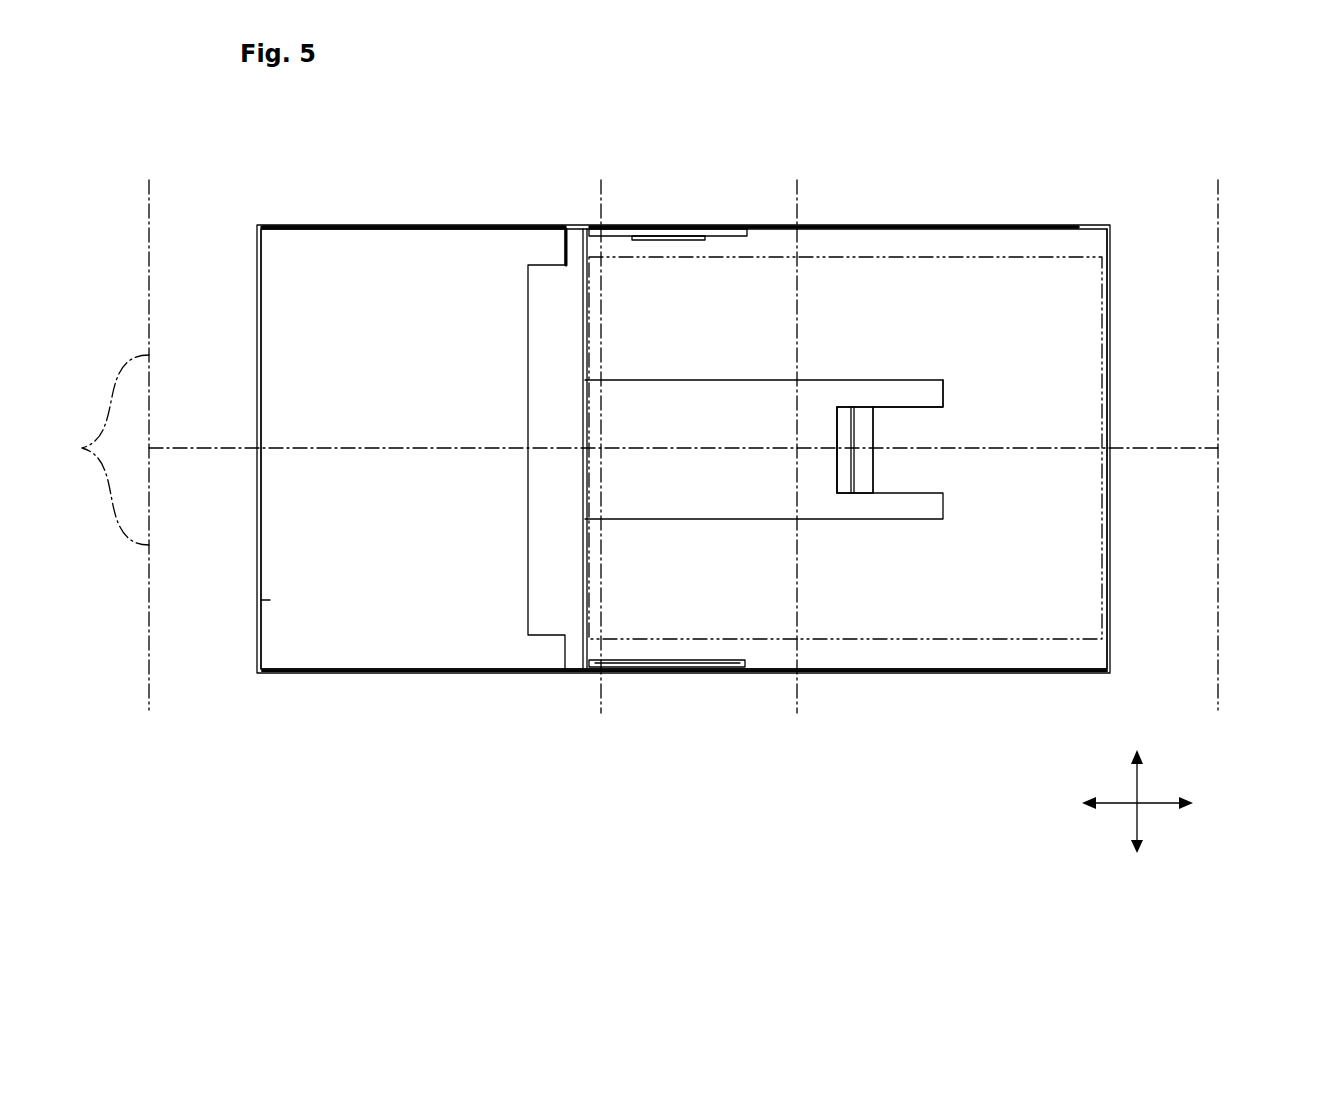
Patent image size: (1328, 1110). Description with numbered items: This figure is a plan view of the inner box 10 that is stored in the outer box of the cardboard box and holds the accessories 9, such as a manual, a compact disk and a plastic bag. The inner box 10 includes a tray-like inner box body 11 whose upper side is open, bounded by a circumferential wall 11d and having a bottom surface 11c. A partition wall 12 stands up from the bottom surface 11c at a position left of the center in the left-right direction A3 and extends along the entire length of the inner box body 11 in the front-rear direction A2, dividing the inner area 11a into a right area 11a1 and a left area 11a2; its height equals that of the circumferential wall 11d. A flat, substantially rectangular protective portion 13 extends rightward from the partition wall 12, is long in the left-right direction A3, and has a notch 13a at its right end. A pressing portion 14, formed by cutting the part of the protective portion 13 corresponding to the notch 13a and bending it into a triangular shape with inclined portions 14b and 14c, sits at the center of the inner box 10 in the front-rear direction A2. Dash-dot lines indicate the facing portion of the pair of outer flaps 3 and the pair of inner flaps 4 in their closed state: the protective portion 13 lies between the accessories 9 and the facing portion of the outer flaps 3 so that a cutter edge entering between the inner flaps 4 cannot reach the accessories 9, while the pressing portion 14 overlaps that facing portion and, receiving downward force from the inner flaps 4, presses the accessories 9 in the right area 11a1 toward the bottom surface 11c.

The outer flaps 3 is at (96, 450).
The inner flaps 4 is at (797, 200).
The accessories 9 is at (1008, 257).
The inner box 10 is at (932, 168).
The inner box body 11 is at (855, 688).
The inner area 11a is at (302, 258).
The right area 11a1 is at (1098, 540).
The left area 11a2 is at (262, 600).
The bottom surface 11c is at (391, 307).
The circumferential wall 11d is at (443, 671).
The partition wall 12 is at (587, 335).
The protective portion 13 is at (693, 519).
The notch 13a is at (908, 408).
The pressing portion 14 is at (858, 394).
The inclined portion 14b is at (865, 483).
The inclined portion 14c is at (846, 483).
The front-rear direction A2 is at (1137, 825).
The left-right direction A3 is at (1155, 800).